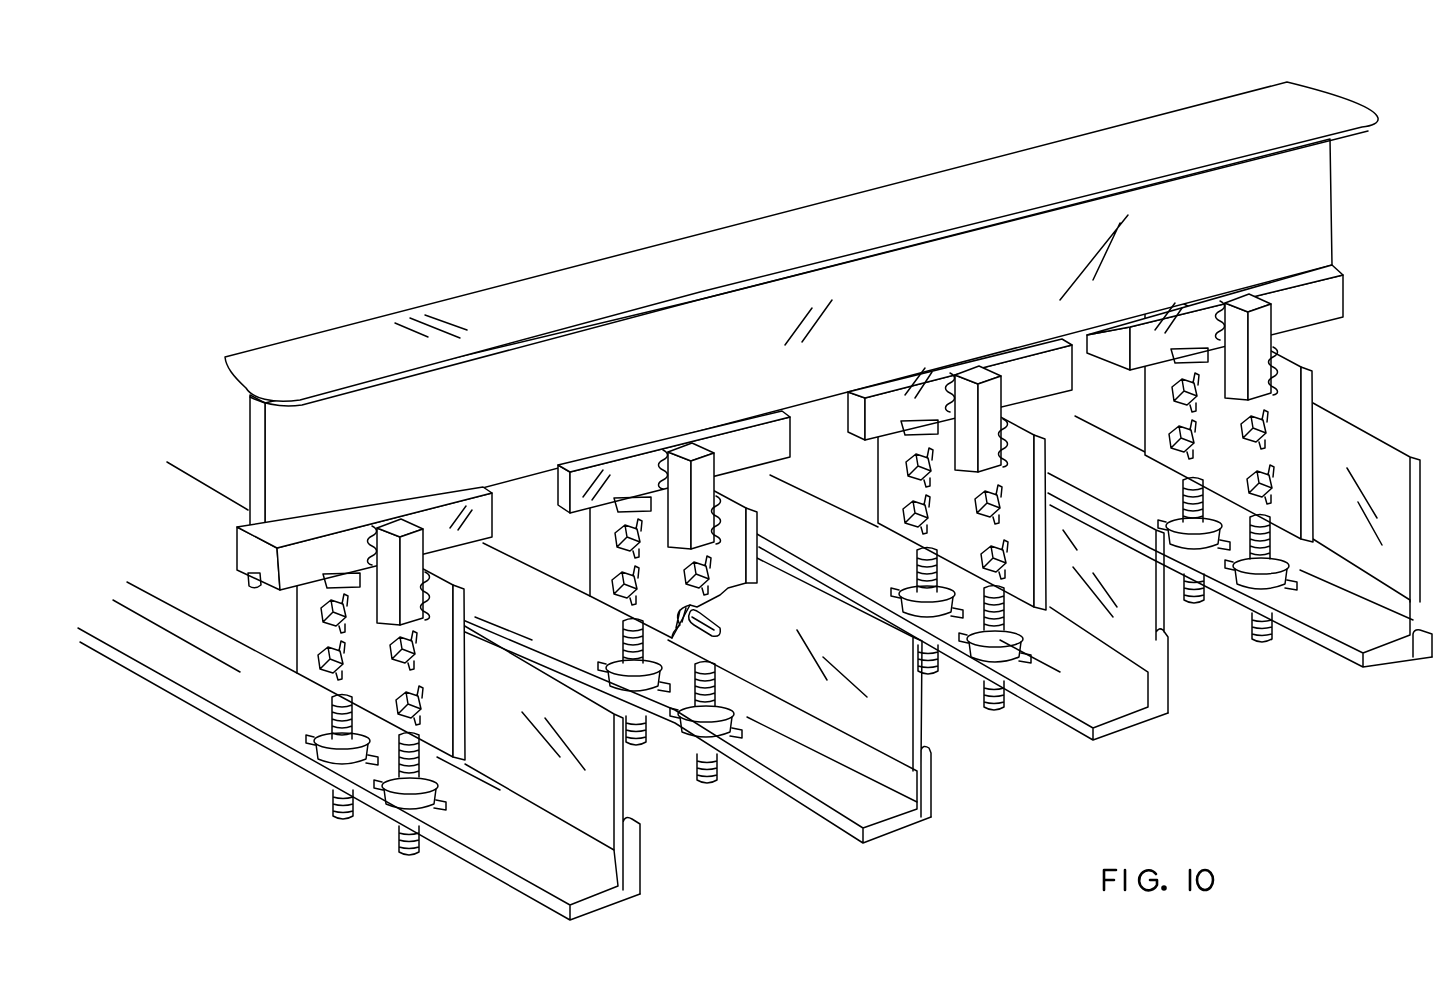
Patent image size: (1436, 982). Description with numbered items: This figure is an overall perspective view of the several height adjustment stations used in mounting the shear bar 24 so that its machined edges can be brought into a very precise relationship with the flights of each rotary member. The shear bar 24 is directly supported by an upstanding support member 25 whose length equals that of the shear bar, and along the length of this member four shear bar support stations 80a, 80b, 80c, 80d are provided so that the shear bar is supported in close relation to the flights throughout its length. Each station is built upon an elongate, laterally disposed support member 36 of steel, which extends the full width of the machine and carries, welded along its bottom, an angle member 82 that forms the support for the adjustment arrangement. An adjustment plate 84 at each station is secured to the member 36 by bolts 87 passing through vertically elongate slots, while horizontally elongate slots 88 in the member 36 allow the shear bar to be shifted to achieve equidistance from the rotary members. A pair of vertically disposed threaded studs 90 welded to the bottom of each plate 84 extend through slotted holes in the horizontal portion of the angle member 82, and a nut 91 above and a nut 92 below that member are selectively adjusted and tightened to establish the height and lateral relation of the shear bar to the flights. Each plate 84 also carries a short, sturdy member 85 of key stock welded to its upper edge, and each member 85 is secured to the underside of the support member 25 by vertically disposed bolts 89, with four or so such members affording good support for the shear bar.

The shear bar 24 is at (1308, 100).
The upstanding support member 25 is at (1312, 197).
The laterally disposed support member 36 is at (612, 772).
The shear bar support station 80a is at (1305, 675).
The shear bar support station 80b is at (1033, 745).
The shear bar support station 80c is at (762, 825).
The shear bar support station 80d is at (375, 853).
The angle member 82 is at (1117, 707).
The adjustment plate 84 is at (308, 622).
The short sturdy member 85 is at (245, 547).
The bolt 87 is at (1265, 483).
The horizontally elongate slot 88 is at (720, 623).
The vertically-disposed bolt 89 is at (248, 583).
The threaded stud 90 is at (413, 850).
The upper nut 91 is at (390, 785).
The lower nut 92 is at (393, 828).